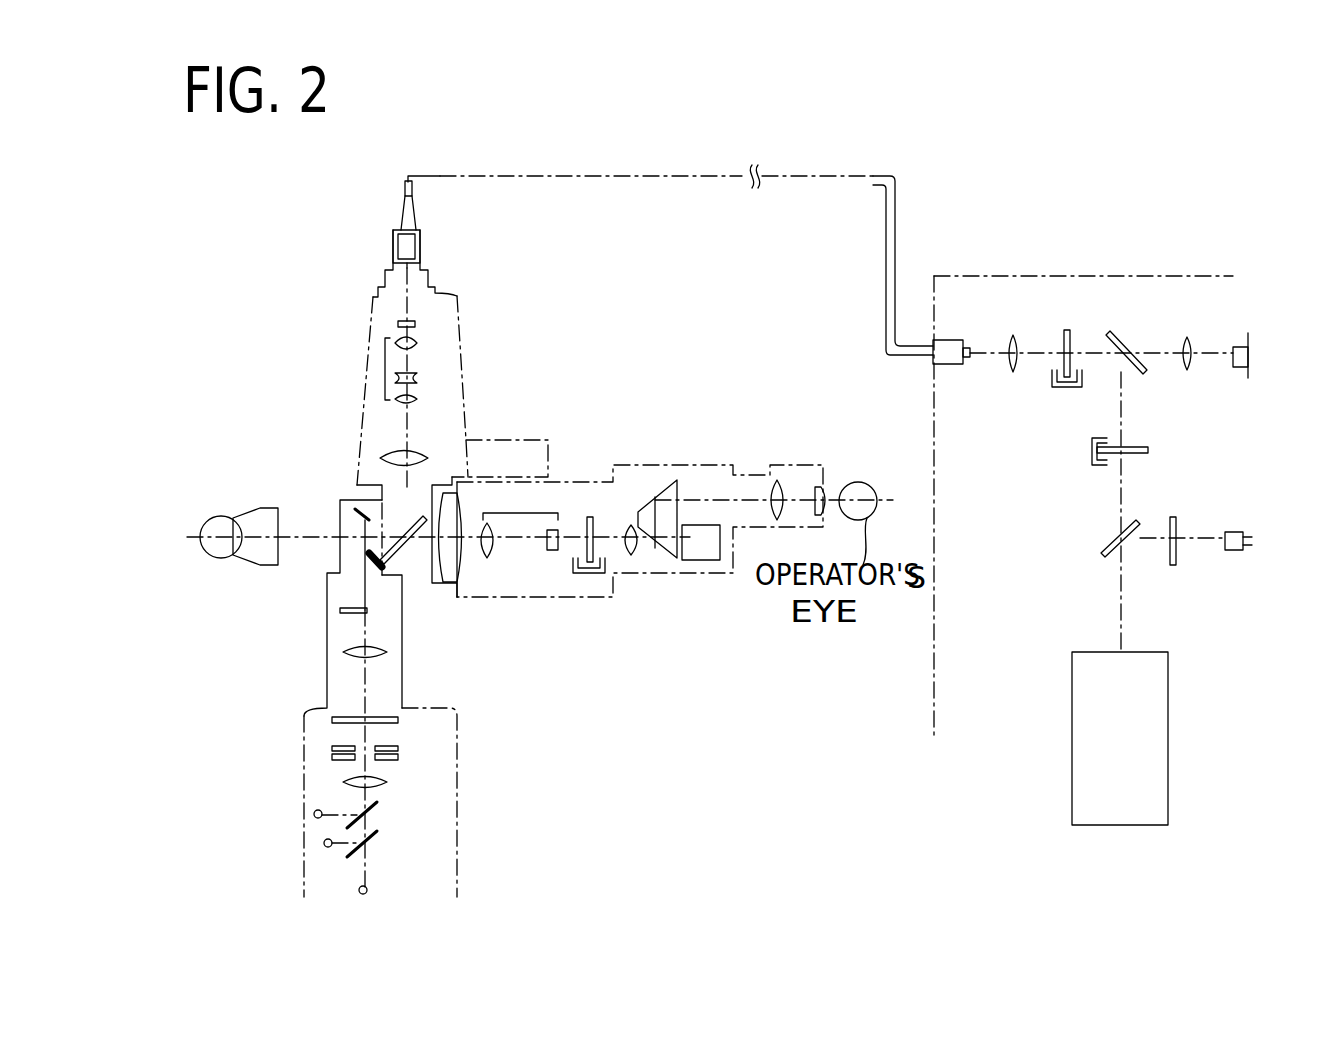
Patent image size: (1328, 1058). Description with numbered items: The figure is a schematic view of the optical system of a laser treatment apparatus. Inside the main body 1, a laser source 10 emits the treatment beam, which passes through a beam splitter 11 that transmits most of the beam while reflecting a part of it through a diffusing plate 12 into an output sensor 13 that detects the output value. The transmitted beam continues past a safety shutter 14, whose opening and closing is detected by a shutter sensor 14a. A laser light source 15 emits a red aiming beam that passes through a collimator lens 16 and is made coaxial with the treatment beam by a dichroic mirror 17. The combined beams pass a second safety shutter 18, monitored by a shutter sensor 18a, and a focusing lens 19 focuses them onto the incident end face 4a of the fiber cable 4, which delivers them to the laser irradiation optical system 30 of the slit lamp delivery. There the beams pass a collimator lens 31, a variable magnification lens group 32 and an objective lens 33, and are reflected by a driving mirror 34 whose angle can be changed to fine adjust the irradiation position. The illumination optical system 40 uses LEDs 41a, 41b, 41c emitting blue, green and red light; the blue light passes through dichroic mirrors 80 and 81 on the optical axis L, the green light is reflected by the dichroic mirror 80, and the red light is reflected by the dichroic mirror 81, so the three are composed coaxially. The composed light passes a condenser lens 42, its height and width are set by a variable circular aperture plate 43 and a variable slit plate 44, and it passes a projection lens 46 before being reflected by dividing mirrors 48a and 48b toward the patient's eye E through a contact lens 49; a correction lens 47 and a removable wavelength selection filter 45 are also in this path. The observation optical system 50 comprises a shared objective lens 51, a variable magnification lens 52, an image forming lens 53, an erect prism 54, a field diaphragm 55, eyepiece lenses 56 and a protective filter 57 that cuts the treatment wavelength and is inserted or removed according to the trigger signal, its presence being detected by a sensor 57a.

The main body 1 is at (1062, 275).
The fiber cable 4 is at (403, 200).
The incident end face 4a is at (968, 352).
The laser source 10 is at (1170, 708).
The beam splitter 11 is at (1103, 550).
The diffusing plate 12 is at (1176, 527).
The output sensor 13 is at (1235, 532).
The safety shutter 14 is at (1148, 446).
The shutter sensor 14a is at (1092, 463).
The laser light source 15 is at (1248, 337).
The collimator lens 16 is at (1188, 338).
The dichroic mirror 17 is at (1121, 337).
The second safety shutter 18 is at (1066, 335).
The shutter sensor 18a is at (1060, 387).
The focusing lens 19 is at (1006, 370).
The laser irradiation optical system 30 is at (480, 291).
The collimator lens 31 is at (396, 323).
The variable magnification lens group 32 is at (383, 368).
The objective lens 33 is at (422, 452).
The driving mirror 34 is at (372, 493).
The illumination optical system 40 is at (530, 752).
The LED 41a is at (366, 893).
The LED 41b is at (327, 847).
The LED 41c is at (316, 817).
The condenser lens 42 is at (387, 783).
The variable circular aperture plate 43 is at (400, 757).
The variable slit plate 44 is at (333, 750).
The wavelength selection filter 45 is at (333, 720).
The projection lens 46 is at (345, 652).
The correction lens 47 is at (341, 610).
The dividing mirror 48a is at (375, 562).
The dividing mirror 48b is at (345, 512).
The contact lens 49 is at (255, 522).
The observation optical system 50 is at (630, 447).
The objective lens 51 is at (452, 517).
The variable magnification lens 52 is at (520, 513).
The image forming lens 53 is at (635, 553).
The erect prism 54 is at (682, 478).
The field diaphragm 55 is at (757, 527).
The eyepiece lens 56 is at (793, 465).
The protective filter 57 is at (589, 515).
The sensor 57a is at (588, 575).
The dichroic mirror 80 is at (377, 837).
The dichroic mirror 81 is at (377, 807).
The patient's eye E is at (222, 547).
The optical axis L is at (370, 697).